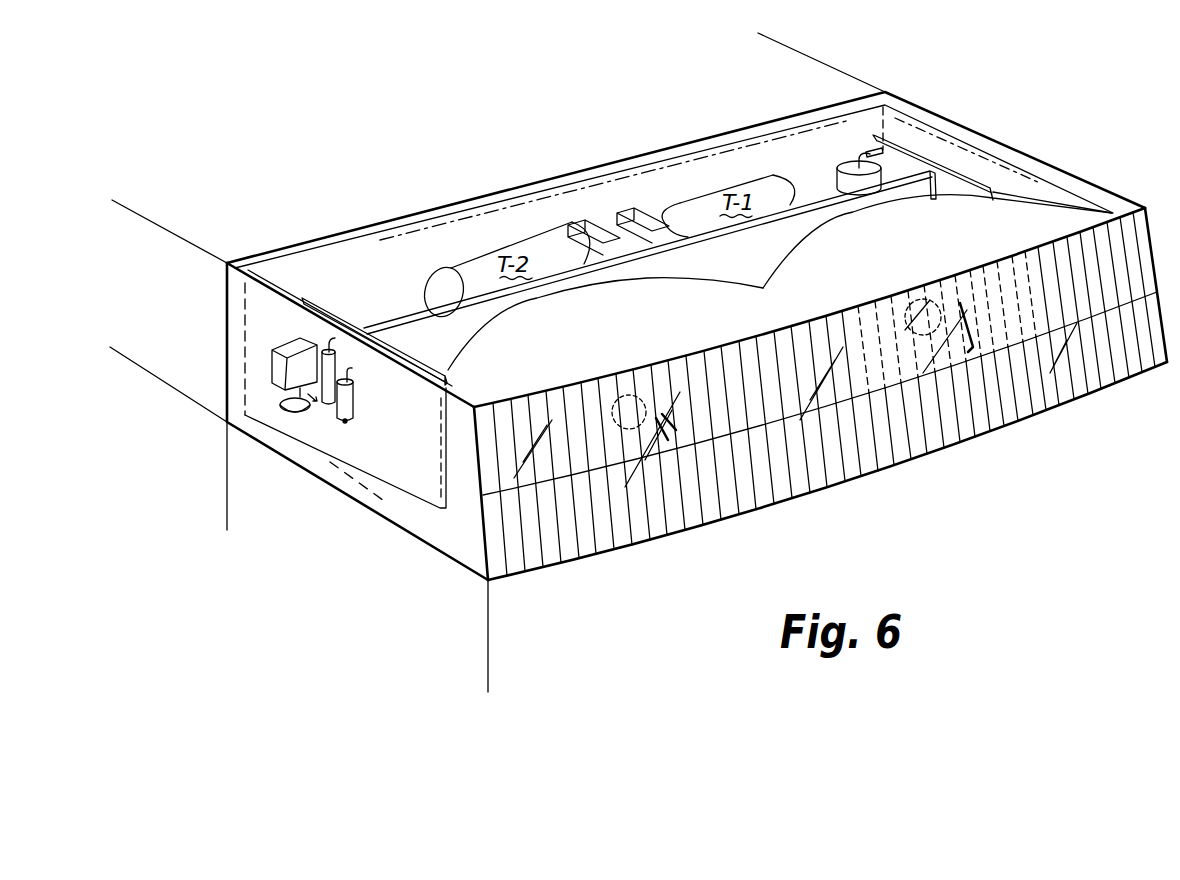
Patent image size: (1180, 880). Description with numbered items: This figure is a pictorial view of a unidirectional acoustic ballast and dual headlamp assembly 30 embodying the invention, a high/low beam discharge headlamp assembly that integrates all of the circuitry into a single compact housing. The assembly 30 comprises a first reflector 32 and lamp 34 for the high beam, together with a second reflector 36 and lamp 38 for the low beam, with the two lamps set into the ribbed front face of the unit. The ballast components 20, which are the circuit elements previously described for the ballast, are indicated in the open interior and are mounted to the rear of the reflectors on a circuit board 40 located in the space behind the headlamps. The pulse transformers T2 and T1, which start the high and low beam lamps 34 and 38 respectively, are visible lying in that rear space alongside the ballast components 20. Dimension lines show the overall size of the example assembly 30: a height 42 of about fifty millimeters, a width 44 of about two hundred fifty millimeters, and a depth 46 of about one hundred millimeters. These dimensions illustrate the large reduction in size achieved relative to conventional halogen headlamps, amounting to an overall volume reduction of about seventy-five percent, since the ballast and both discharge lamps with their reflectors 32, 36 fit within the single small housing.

The ballast components 20 is at (392, 300).
The unidirectional acoustic ballast and dual headlamp assembly 30 is at (780, 84).
The first reflector 32 is at (460, 349).
The high beam lamp 34 is at (638, 397).
The second reflector 36 is at (989, 199).
The low beam lamp 38 is at (934, 302).
The circuit board 40 is at (903, 175).
The height 42 is at (125, 208).
The width 44 is at (767, 37).
The depth 46 is at (487, 676).